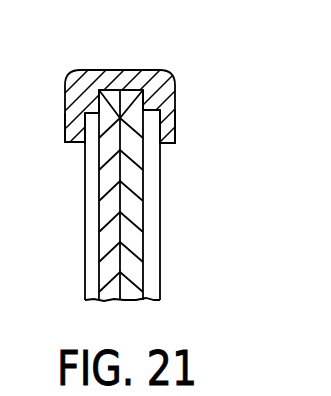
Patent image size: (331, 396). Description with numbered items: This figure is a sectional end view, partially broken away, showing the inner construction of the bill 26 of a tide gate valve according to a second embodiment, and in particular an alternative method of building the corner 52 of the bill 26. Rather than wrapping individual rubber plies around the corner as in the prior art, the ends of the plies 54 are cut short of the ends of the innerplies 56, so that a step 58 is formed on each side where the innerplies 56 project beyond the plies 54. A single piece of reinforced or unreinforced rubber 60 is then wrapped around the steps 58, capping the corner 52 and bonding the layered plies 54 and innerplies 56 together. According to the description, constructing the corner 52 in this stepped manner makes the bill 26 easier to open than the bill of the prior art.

The bill 26 is at (180, 250).
The corner 52 is at (136, 69).
The plies 54 is at (85, 220).
The innerplies 56 is at (147, 153).
The step 58 is at (64, 111).
The reinforced or unreinforced rubber 60 is at (96, 70).